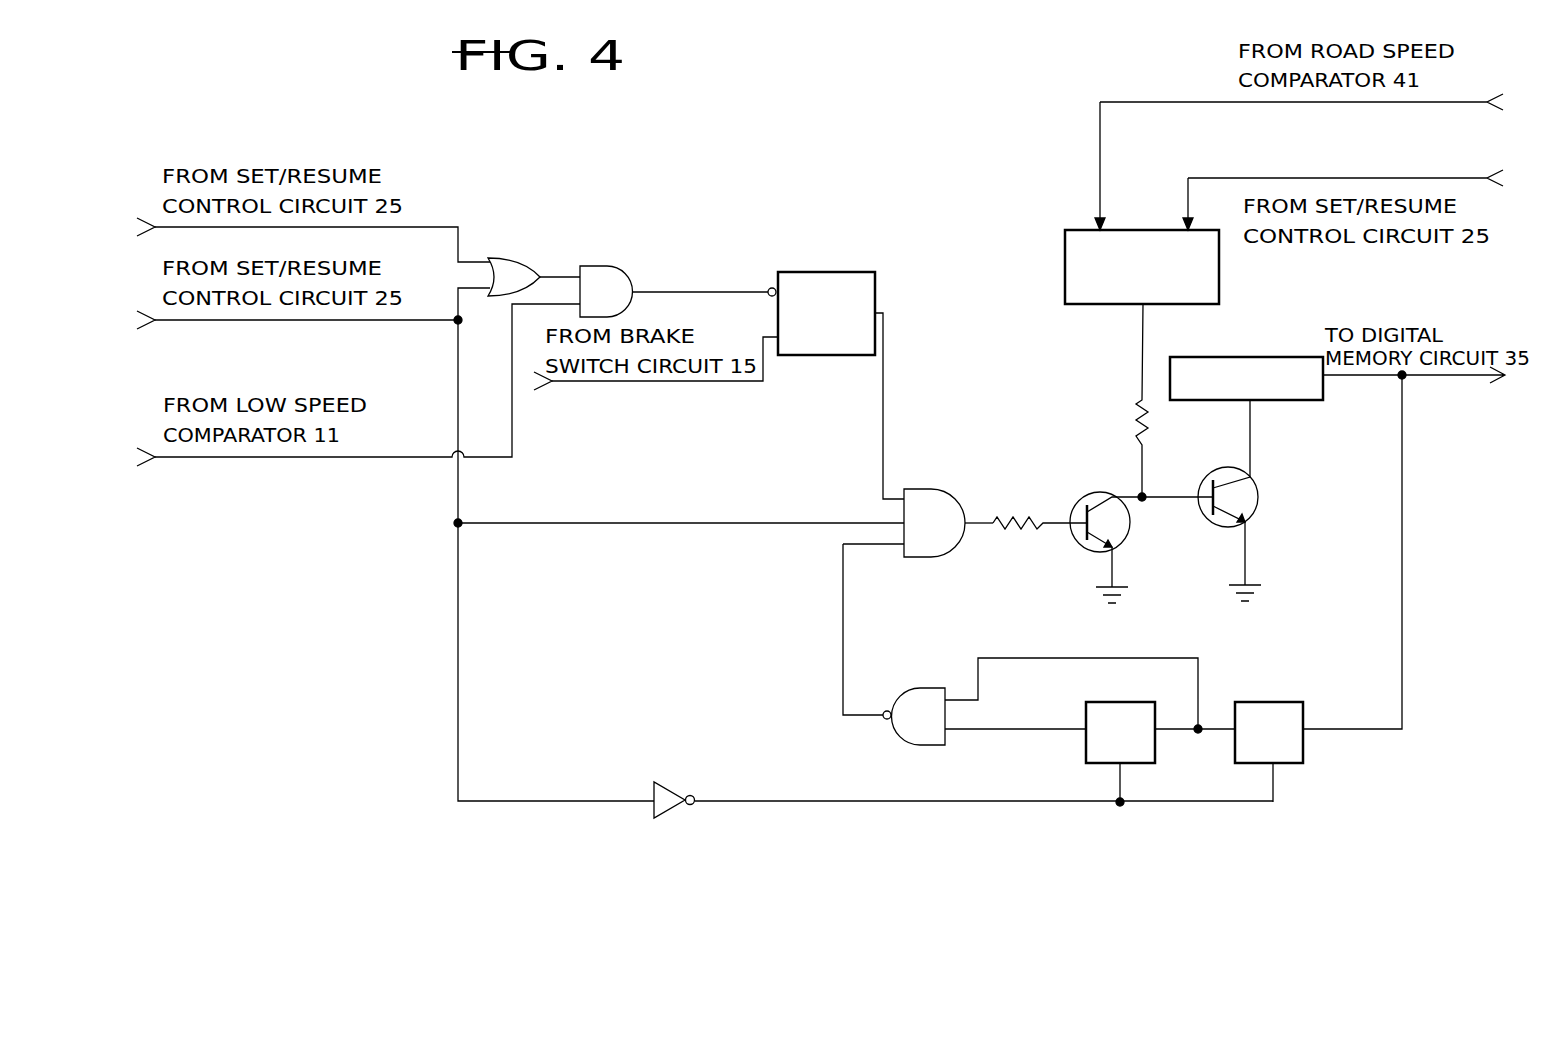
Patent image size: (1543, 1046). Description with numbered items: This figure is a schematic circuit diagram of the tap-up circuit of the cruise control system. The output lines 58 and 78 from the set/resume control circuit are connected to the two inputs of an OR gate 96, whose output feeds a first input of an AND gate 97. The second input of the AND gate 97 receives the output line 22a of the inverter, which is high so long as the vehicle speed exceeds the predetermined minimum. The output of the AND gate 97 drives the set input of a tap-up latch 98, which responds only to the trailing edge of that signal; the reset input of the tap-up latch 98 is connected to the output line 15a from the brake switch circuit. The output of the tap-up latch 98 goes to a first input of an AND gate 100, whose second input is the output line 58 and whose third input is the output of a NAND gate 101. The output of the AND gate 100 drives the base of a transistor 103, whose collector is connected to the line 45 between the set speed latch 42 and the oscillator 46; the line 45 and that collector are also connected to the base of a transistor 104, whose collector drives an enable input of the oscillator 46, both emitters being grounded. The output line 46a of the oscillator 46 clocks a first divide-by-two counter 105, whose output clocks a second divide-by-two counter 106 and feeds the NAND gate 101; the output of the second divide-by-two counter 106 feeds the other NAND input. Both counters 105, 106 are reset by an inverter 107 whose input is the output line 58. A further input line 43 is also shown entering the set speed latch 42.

The output line 78 is at (437, 226).
The output line 58 is at (423, 322).
The output line 22a is at (408, 459).
The OR gate 96 is at (519, 258).
The AND gate 97 is at (622, 268).
The tap-up latch 98 is at (826, 272).
The output line 15a is at (675, 383).
The AND gate 100 is at (947, 492).
The transistor 103 is at (1082, 496).
The line 45 is at (1142, 356).
The transistor 104 is at (1258, 500).
The set speed latch 42 is at (1065, 275).
The set/resume input line 43 is at (1305, 178).
The oscillator 46 is at (1222, 357).
The output line 46a is at (1448, 377).
The NAND gate 101 is at (907, 690).
The second divide-by-two counter 106 is at (1118, 702).
The first divide-by-two counter 105 is at (1280, 702).
The inverter 107 is at (672, 792).